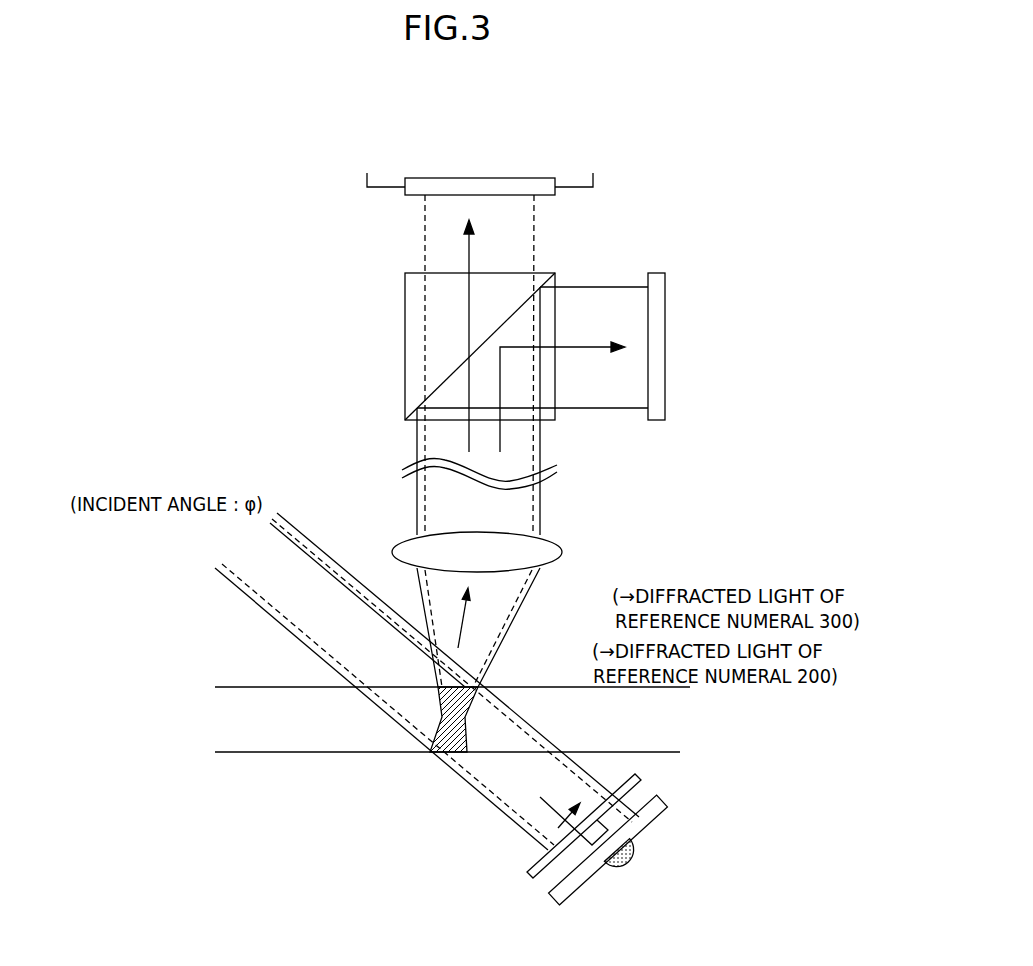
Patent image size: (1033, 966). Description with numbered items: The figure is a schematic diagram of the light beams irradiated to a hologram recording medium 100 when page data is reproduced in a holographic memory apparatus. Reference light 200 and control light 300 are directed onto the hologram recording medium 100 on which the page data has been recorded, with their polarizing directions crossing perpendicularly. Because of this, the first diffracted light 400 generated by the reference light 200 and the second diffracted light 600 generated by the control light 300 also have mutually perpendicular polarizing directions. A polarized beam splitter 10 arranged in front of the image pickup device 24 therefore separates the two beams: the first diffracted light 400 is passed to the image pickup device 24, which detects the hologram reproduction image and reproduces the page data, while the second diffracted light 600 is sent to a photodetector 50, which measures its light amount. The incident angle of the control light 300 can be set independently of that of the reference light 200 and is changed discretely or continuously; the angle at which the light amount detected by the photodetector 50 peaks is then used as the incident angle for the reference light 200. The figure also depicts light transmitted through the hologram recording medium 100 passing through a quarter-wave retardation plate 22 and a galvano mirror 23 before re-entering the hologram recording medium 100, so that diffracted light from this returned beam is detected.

The polarized beam splitter 10 is at (405, 346).
The quarter-wave retardation plate 22 is at (528, 877).
The galvano mirror 23 is at (555, 903).
The image pickup device 24 is at (665, 347).
The photodetector 50 is at (481, 178).
The hologram recording medium 100 is at (272, 752).
The reference light 200 is at (305, 537).
The control light 300 is at (229, 572).
The first diffracted light 400 is at (602, 297).
The second diffracted light 600 is at (438, 240).